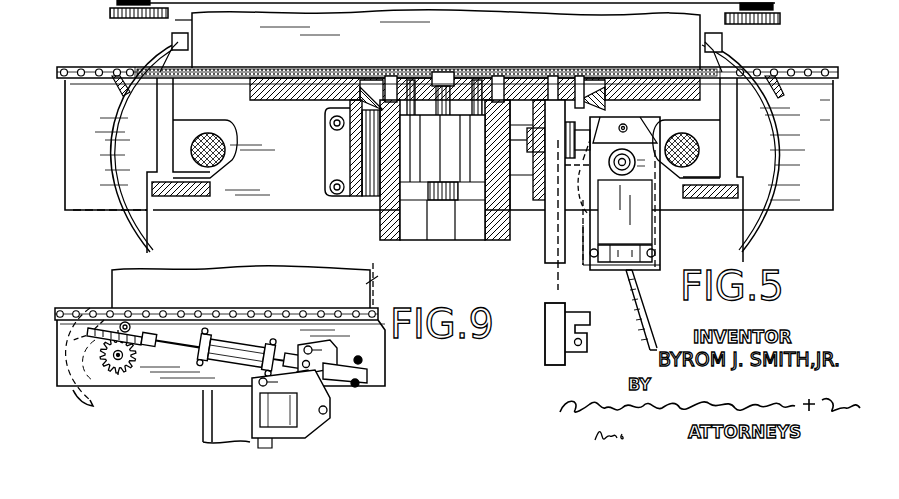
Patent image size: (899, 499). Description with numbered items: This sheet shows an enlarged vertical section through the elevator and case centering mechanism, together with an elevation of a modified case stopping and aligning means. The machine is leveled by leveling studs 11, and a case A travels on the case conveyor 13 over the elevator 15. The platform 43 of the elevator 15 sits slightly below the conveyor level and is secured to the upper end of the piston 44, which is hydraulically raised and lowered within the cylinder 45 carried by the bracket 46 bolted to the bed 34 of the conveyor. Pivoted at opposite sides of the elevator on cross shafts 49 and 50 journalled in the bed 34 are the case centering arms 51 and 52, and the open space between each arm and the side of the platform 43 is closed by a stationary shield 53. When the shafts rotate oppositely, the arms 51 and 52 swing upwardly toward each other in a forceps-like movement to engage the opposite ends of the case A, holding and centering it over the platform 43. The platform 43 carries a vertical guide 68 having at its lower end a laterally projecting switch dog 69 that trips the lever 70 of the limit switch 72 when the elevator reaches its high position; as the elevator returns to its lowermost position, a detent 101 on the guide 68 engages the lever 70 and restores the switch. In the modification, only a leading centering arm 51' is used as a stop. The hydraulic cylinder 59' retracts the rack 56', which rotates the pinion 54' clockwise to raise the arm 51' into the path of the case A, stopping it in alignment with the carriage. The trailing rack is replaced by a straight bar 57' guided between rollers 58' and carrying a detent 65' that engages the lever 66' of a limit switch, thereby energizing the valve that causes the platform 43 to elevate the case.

In FIG. 5, the leveling studs 11 is at (108, 14).
In FIG. 5, the case conveyor 13 is at (796, 72).
In FIG. 5, the elevator 15 is at (360, 50).
In FIG. 5, the bed 34 is at (274, 212).
In FIG. 5, the platform 43 is at (520, 72).
In FIG. 5, the piston 44 is at (443, 72).
In FIG. 5, the cylinder 45 is at (383, 215).
In FIG. 5, the bracket 46 is at (330, 142).
In FIG. 5, the cross shaft 49 is at (224, 145).
In FIG. 5, the cross shaft 50 is at (686, 134).
In FIG. 5, the case centering arm 51 is at (140, 153).
In FIG. 5, the case centering arm 52 is at (744, 48).
In FIG. 5, the stationary shield 53 is at (205, 70).
In FIG. 5, the vertical guide 68 is at (545, 240).
In FIG. 5, the switch dog 69 is at (570, 310).
In FIG. 5, the lever 70 is at (612, 150).
In FIG. 5, the limit switch 72 is at (622, 170).
In FIG. 5, the detent 101 is at (557, 278).
In FIG. 5, the case A is at (176, 21).
In FIG. 9, the case A is at (381, 276).
In FIG. 9, the leading centering arm 51' is at (90, 368).
In FIG. 9, the pinion 54' is at (127, 377).
In FIG. 9, the rack 56' is at (140, 312).
In FIG. 9, the straight bar 57' is at (334, 396).
In FIG. 9, the rollers 58' is at (365, 363).
In FIG. 9, the hydraulic cylinder 59' is at (213, 329).
In FIG. 9, the detent 65' is at (308, 324).
In FIG. 9, the lever 66' is at (310, 409).